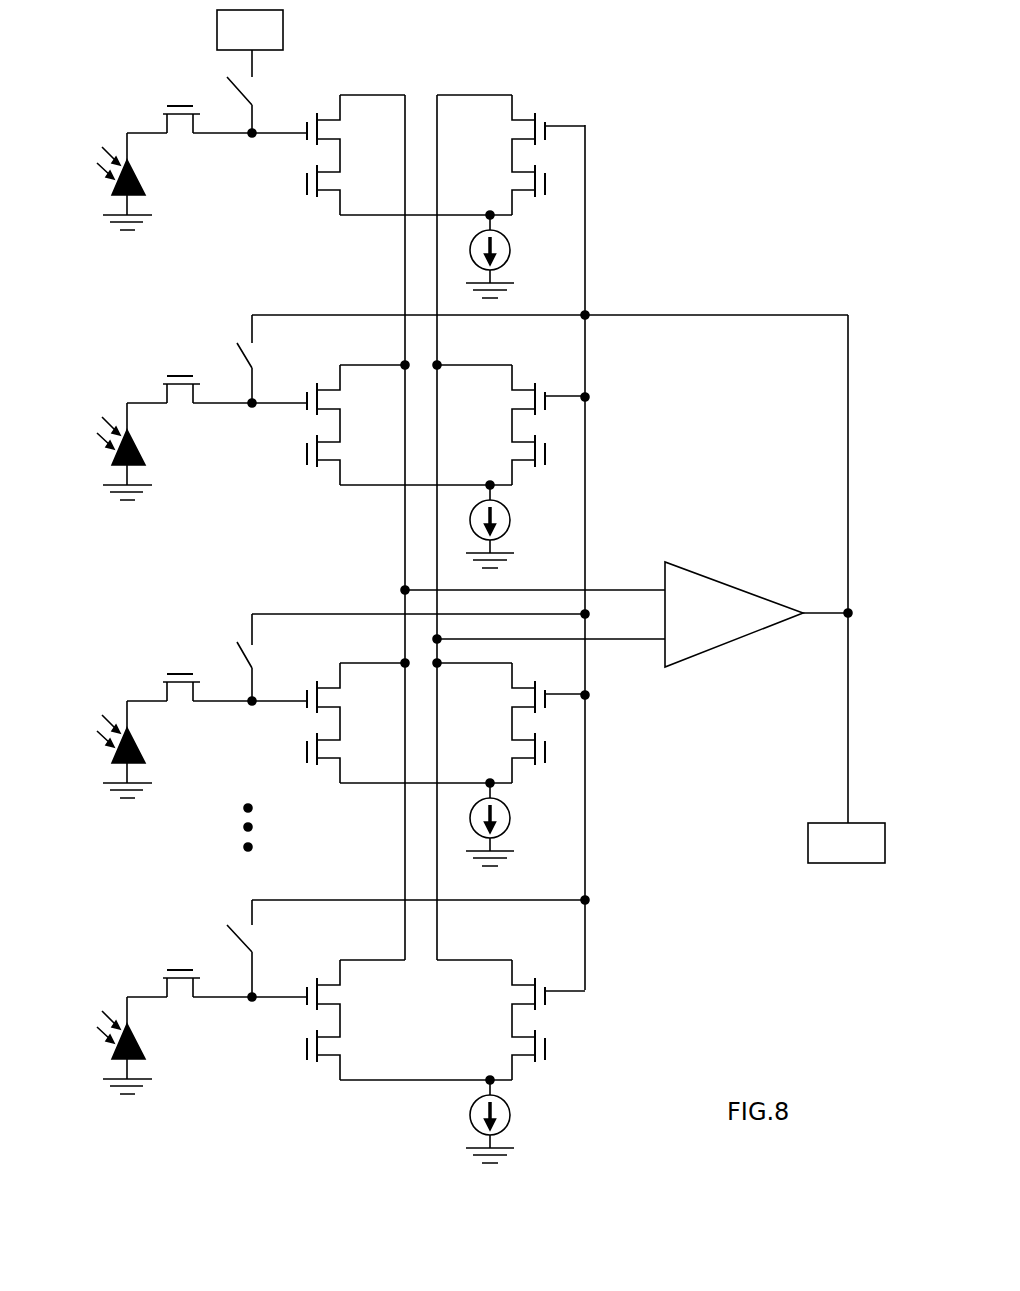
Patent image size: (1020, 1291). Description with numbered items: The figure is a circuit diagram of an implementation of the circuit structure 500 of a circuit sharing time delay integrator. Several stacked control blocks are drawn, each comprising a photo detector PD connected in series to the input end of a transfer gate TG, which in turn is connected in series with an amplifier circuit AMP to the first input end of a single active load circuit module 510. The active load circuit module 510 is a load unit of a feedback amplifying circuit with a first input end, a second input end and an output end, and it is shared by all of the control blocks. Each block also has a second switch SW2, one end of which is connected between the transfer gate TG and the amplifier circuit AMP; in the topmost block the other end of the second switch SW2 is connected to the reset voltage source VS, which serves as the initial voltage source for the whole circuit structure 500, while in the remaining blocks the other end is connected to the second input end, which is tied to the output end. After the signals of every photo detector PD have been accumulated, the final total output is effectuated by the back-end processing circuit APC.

The circuit structure 500 is at (757, 52).
The active load circuit module 510 is at (756, 614).
The amplifier circuit AMP is at (448, 598).
The photo detector PD is at (135, 613).
The transfer gate TG is at (223, 542).
The reset voltage source VS is at (250, 43).
The second switch SW2 is at (263, 537).
The back-end processing circuit APC is at (846, 843).